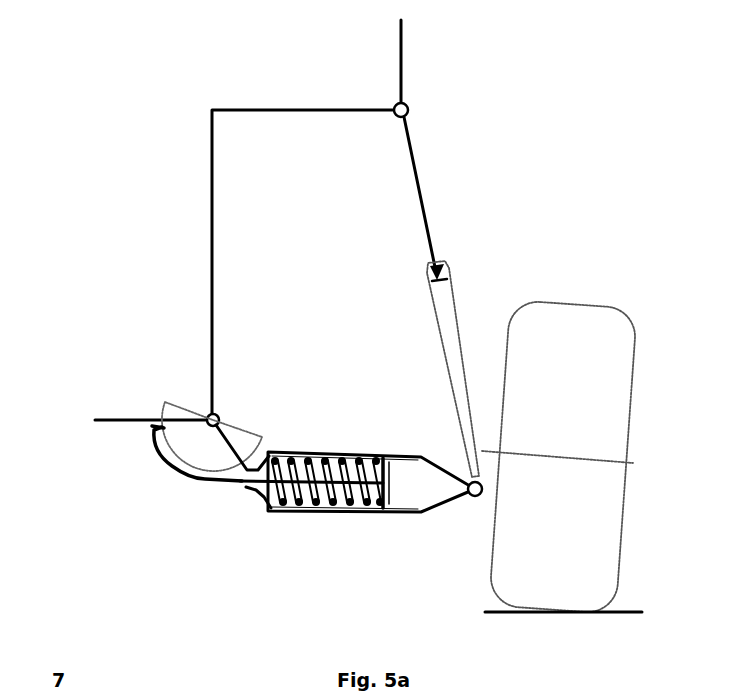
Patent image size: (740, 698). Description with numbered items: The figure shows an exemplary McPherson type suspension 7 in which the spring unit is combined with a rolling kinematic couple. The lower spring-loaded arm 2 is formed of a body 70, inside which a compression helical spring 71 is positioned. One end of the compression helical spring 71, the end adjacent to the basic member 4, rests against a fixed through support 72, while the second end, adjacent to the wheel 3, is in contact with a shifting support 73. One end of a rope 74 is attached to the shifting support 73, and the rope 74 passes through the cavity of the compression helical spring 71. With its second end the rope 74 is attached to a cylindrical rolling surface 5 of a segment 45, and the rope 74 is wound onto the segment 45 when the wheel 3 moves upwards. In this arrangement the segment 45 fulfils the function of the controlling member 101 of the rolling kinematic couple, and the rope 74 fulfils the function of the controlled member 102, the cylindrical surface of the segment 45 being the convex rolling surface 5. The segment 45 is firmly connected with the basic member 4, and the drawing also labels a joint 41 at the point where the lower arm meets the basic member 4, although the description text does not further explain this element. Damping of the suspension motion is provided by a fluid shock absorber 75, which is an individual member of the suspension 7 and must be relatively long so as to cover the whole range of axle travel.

The suspension 7 is at (180, 131).
The basic member 4 is at (210, 248).
The cylindrical rolling surface 5 is at (159, 411).
The pivot joint 41 is at (207, 415).
The segment 45 is at (187, 433).
The controlling member 101 is at (207, 436).
The rope 74 is at (237, 483).
The controlled member 102 is at (211, 453).
The fixed through support 72 is at (257, 489).
The lower spring-loaded arm 2 is at (357, 520).
The body 70 is at (370, 514).
The compression helical spring 71 is at (330, 503).
The shifting support 73 is at (388, 477).
The fluid shock absorber 75 is at (440, 292).
The wheel 3 is at (587, 338).